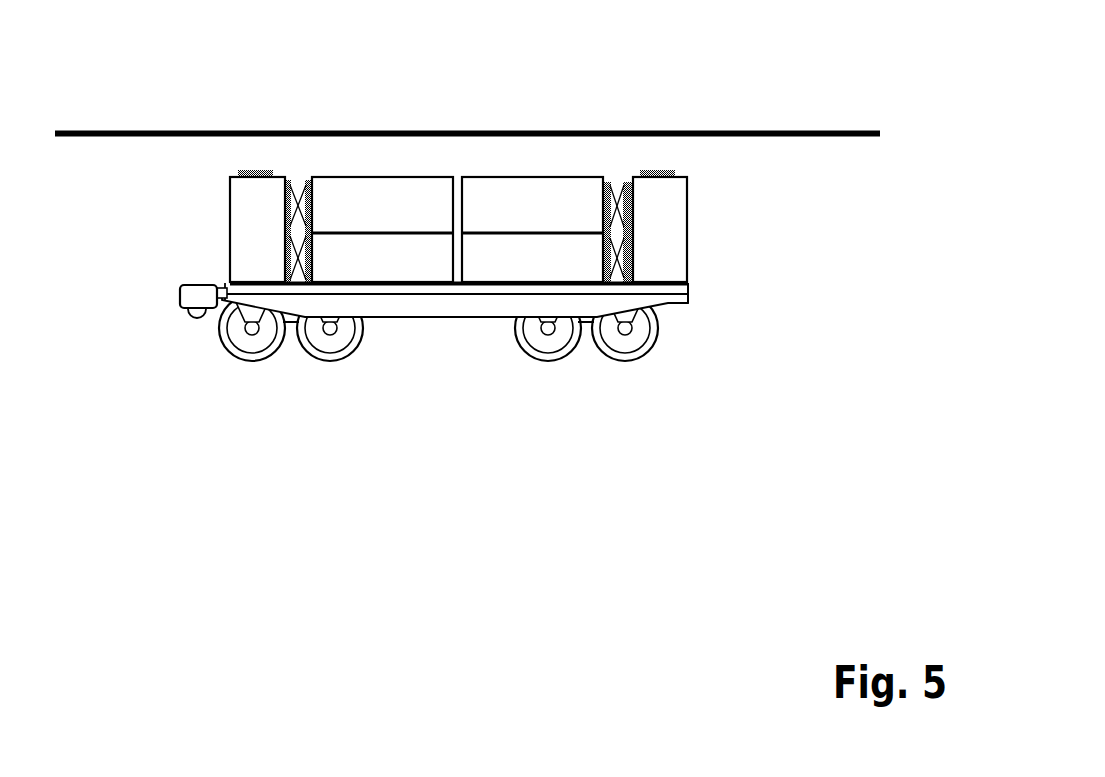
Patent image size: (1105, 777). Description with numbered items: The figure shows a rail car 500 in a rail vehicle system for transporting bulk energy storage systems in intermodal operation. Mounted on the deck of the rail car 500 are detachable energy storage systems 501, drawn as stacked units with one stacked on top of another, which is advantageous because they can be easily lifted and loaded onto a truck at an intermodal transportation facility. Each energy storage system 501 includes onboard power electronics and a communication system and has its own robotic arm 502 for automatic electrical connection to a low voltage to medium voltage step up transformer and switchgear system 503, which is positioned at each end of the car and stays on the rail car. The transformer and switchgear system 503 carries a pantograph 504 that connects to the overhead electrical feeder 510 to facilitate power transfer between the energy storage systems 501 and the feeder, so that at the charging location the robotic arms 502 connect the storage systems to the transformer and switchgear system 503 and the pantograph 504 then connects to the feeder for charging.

The rail car 500 is at (631, 402).
The detachable energy storage system 501 is at (510, 255).
The robotic arm 502 is at (531, 159).
The low voltage to medium voltage step up transformer and switchgear system 503 is at (743, 263).
The pantograph 504 is at (750, 173).
The overhead catenary line 510 is at (467, 118).